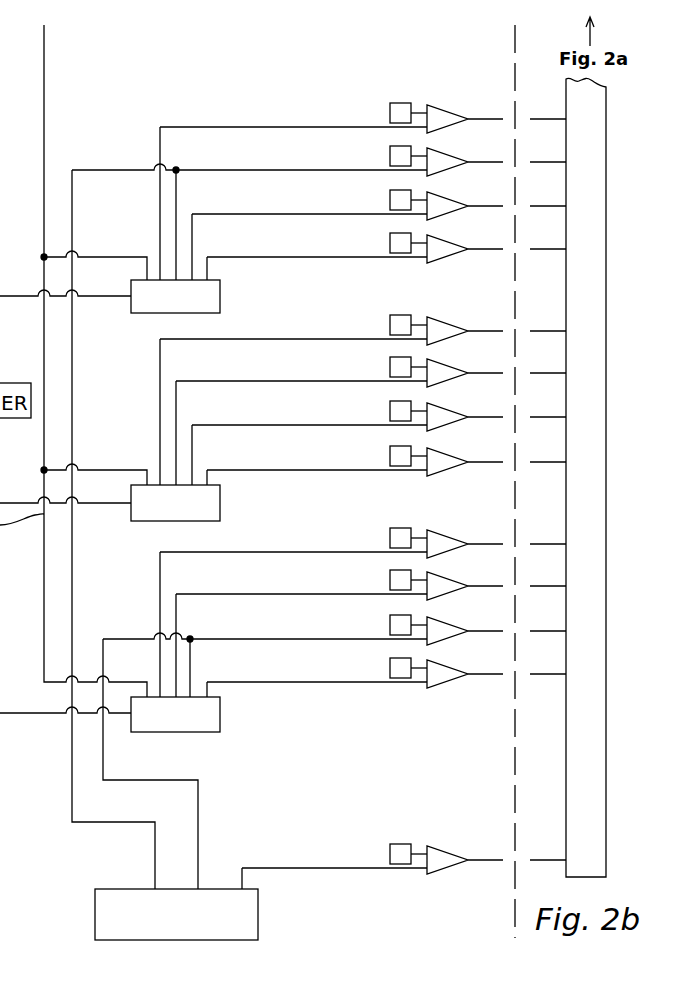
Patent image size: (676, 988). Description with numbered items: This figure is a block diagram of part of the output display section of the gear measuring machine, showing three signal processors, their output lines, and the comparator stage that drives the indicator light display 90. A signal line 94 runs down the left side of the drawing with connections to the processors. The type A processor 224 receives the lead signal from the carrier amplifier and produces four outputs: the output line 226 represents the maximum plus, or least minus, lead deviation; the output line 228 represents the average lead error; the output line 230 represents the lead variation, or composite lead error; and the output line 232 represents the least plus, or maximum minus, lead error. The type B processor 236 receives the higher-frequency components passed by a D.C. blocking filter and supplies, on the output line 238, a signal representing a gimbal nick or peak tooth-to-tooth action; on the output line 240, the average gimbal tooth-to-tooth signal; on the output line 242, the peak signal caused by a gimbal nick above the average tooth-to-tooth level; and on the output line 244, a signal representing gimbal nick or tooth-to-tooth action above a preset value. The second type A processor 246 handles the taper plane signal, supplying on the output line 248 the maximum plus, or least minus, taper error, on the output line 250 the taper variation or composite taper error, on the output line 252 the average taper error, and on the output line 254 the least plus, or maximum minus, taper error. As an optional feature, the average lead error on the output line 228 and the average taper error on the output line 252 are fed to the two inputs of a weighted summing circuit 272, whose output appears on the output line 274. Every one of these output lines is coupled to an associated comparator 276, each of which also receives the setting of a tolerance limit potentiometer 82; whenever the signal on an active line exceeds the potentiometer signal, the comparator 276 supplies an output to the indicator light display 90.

The tolerance limit potentiometer 82 is at (390, 107).
The indicator light display 90 is at (606, 405).
The signal line 94 is at (44, 47).
The type A processor 224 is at (221, 293).
The output line 226 is at (236, 126).
The output line 228 is at (242, 169).
The output line 230 is at (271, 213).
The output line 232 is at (284, 257).
The type B processor 236 is at (221, 492).
The output line 238 is at (280, 339).
The output line 240 is at (262, 381).
The output line 242 is at (264, 425).
The output line 244 is at (278, 470).
The type A processor 246 is at (221, 720).
The output line 248 is at (302, 552).
The output line 250 is at (264, 591).
The output line 252 is at (272, 638).
The output line 254 is at (282, 682).
The weighted summing circuit 272 is at (258, 913).
The output line 274 is at (287, 866).
The comparator 276 is at (444, 116).